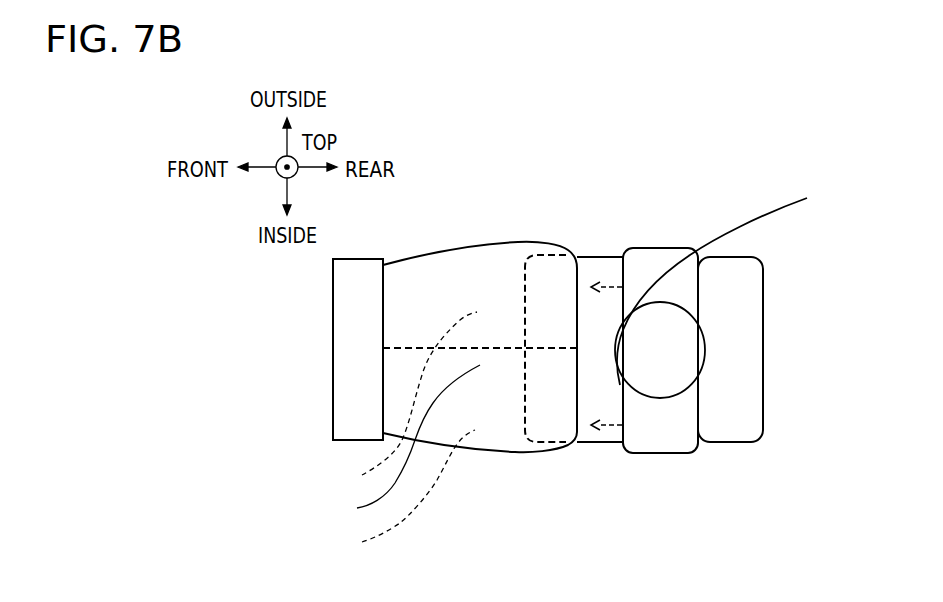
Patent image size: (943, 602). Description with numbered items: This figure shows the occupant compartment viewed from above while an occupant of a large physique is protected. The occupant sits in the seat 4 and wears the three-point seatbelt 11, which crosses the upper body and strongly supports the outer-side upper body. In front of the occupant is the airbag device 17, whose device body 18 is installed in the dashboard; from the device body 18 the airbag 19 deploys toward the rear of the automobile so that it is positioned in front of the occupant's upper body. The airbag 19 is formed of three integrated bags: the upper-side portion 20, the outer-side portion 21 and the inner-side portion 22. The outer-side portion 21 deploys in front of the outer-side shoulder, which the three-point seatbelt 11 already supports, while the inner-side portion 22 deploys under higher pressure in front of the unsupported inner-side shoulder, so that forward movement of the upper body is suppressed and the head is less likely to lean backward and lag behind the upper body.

The seat 4 is at (738, 370).
The three-point seatbelt 11 is at (763, 213).
The airbag device 17 is at (278, 370).
The device body 18 is at (363, 330).
The airbag 19 is at (328, 465).
The upper-side portion 20 is at (405, 446).
The outer-side portion 21 is at (403, 402).
The inner-side portion 22 is at (402, 495).